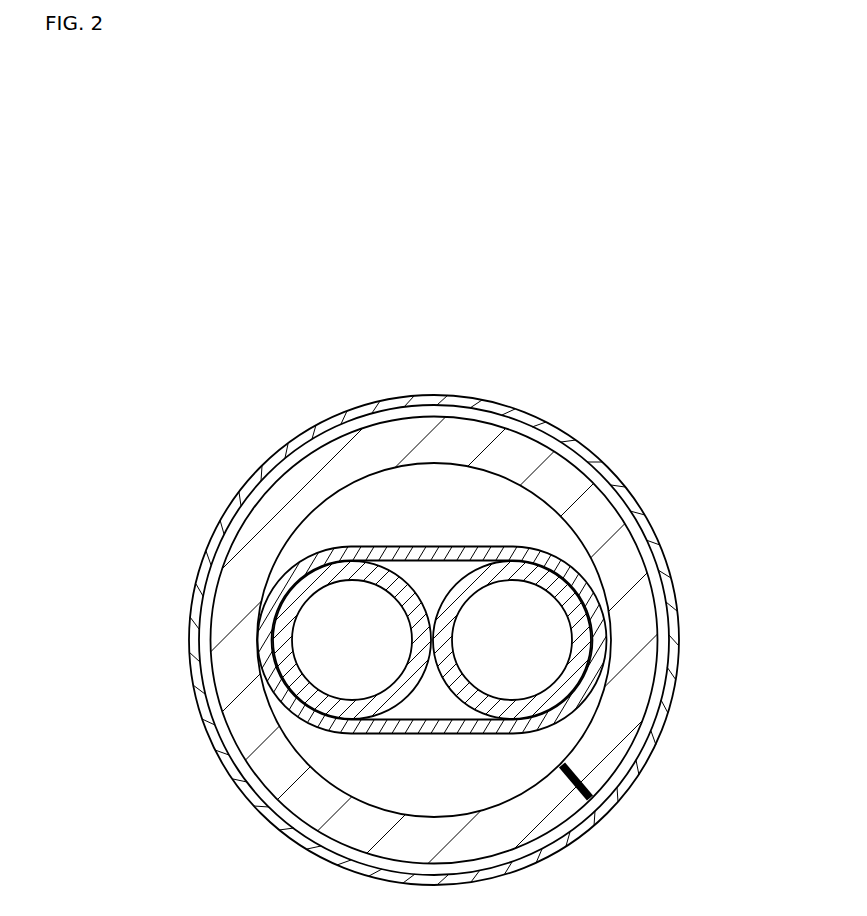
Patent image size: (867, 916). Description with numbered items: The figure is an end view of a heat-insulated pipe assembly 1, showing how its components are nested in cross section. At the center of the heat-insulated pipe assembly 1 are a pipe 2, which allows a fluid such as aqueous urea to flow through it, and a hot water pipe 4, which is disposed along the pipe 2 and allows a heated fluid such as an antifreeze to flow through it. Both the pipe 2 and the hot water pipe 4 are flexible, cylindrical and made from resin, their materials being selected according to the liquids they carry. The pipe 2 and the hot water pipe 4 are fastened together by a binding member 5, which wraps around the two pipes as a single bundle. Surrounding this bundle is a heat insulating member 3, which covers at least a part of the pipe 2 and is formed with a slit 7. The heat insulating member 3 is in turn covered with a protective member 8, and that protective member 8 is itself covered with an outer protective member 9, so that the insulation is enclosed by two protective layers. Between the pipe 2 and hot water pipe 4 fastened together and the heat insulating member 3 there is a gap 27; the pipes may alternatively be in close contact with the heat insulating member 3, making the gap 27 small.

The heat-insulated pipe assembly 1 is at (502, 343).
The pipe 2 is at (276, 686).
The heat insulating member 3 is at (545, 462).
The hot water pipe 4 is at (548, 566).
The binding member 5 is at (317, 552).
The slit 7 is at (577, 766).
The protective member 8 is at (652, 556).
The protective member 9 is at (678, 593).
The gap 27 is at (408, 498).